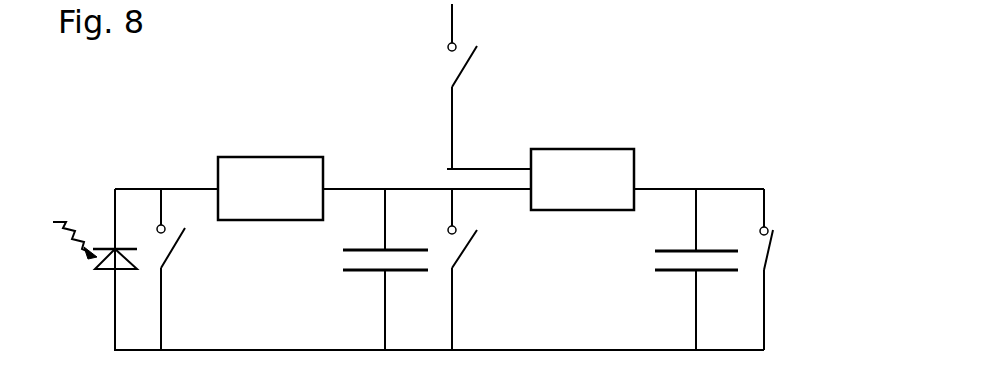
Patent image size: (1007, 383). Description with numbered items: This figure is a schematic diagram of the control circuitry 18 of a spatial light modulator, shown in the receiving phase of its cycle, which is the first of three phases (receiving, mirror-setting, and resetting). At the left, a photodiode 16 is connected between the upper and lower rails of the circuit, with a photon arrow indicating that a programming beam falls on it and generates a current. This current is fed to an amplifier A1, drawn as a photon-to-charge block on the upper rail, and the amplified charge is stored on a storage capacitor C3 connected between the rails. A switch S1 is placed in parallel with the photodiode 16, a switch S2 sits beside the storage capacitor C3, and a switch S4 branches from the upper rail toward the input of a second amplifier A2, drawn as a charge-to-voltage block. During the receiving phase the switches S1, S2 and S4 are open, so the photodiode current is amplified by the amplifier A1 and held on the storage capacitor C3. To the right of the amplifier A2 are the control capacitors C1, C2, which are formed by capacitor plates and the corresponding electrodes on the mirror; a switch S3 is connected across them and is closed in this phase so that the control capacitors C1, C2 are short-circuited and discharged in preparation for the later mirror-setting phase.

The photodiode 16 is at (107, 272).
The control circuitry 18 is at (737, 112).
The amplifier A1 is at (257, 157).
The amplifier A2 is at (592, 149).
The switch S1 is at (176, 269).
The switch S2 is at (471, 269).
The switch S3 is at (786, 269).
The switch S4 is at (489, 86).
The storage capacitor C3 is at (378, 269).
The control capacitor C1 is at (665, 269).
The control capacitor C2 is at (665, 269).